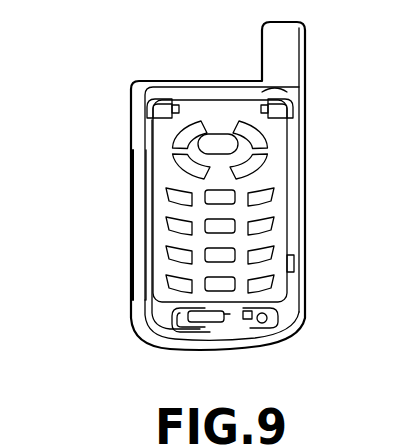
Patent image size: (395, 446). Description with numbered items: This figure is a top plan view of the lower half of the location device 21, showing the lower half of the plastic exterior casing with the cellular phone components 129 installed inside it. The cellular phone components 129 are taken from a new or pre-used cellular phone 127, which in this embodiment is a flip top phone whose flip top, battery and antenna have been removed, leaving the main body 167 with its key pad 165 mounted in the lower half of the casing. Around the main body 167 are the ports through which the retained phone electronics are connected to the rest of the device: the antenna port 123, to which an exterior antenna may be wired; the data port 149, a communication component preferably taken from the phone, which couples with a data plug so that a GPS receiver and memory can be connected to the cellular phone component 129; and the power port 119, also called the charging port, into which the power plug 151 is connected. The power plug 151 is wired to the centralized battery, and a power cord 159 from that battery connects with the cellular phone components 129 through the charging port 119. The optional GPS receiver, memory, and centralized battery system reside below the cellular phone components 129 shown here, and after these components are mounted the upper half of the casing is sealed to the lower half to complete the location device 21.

The location device 21 is at (316, 170).
The power port 119 is at (237, 315).
The antenna port 123 is at (264, 92).
The cellular phone 127 is at (277, 150).
The cellular phone component 129 is at (126, 201).
The data port 149 is at (175, 310).
The power plug 151 is at (264, 322).
The power cord 159 is at (150, 251).
The key pad 165 is at (270, 249).
The main body 167 is at (282, 214).